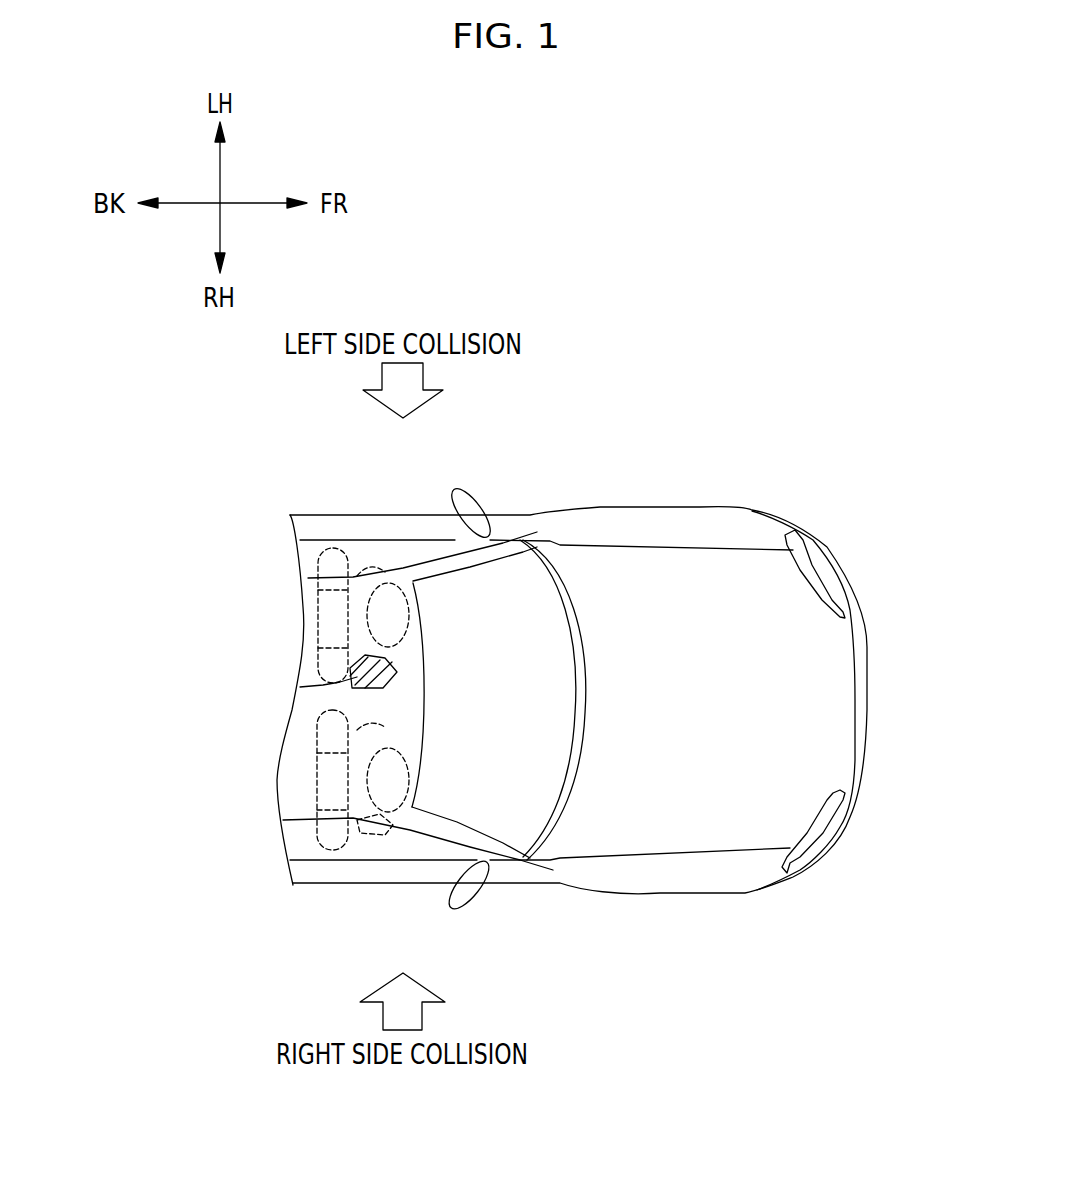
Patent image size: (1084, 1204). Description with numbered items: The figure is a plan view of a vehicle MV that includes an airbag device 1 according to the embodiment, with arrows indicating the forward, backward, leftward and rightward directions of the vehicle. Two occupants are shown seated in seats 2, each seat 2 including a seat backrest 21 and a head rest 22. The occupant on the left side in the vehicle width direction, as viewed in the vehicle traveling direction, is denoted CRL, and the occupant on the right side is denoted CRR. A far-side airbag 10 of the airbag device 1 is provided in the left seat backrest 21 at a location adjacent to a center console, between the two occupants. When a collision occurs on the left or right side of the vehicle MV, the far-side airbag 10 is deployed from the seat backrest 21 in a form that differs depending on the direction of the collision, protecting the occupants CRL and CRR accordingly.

The airbag device 1 is at (845, 210).
The seat 2 is at (337, 740).
The far-side airbag 10 is at (347, 682).
The seat backrest 21 is at (328, 548).
The head rest 22 is at (305, 608).
The vehicle MV is at (618, 503).
The occupant on the left side CRL is at (372, 568).
The occupant on the right side CRR is at (373, 830).